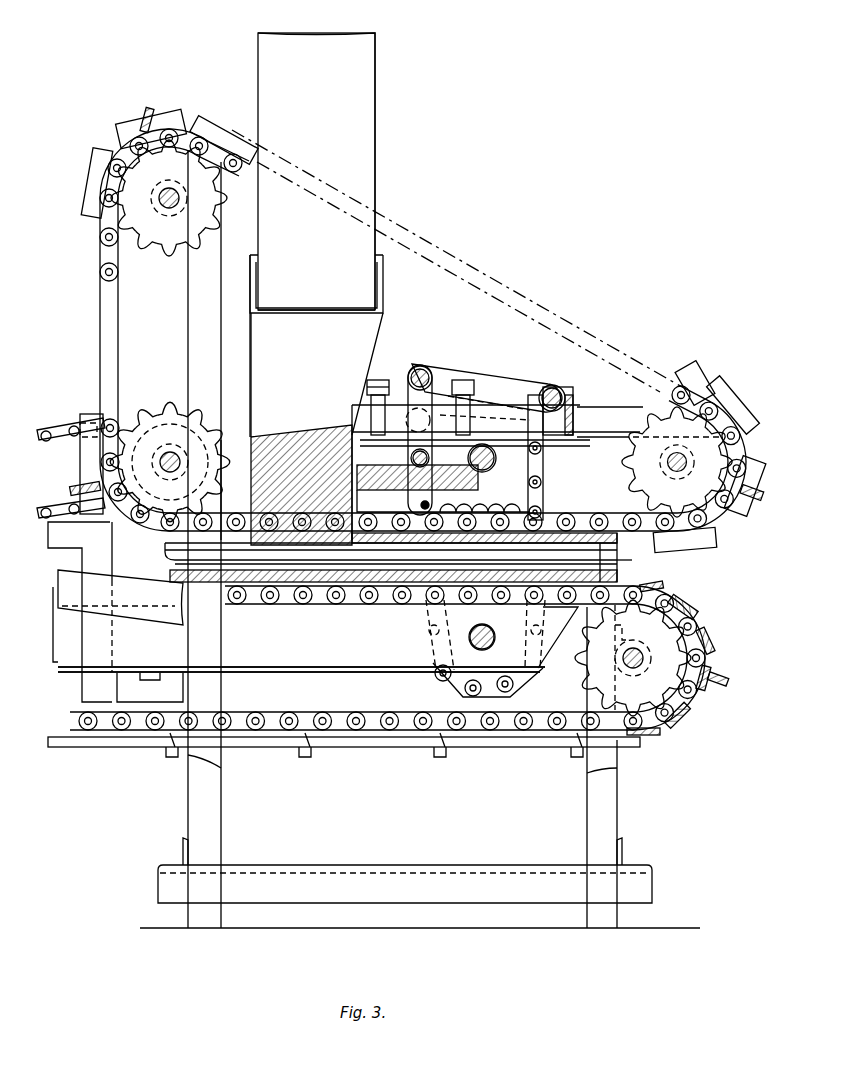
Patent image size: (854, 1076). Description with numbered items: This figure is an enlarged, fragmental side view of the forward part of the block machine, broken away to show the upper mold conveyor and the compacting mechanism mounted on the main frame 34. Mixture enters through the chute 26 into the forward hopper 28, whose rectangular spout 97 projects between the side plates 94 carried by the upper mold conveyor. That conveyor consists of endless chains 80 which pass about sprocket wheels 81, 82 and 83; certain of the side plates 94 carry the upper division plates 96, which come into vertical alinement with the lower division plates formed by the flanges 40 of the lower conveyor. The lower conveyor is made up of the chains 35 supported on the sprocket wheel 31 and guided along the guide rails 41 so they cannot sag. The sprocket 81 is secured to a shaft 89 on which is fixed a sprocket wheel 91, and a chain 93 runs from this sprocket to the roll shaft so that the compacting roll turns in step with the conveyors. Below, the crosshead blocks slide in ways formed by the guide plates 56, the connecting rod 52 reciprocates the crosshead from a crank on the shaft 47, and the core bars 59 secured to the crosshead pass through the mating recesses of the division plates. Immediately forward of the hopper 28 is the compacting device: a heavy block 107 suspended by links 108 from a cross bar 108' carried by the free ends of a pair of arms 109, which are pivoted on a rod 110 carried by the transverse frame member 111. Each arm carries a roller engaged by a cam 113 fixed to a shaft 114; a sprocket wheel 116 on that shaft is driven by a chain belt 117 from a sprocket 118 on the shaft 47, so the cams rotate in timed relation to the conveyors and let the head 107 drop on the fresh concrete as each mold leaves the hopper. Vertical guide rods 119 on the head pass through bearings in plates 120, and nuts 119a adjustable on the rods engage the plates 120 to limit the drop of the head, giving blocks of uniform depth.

The chute 26 is at (373, 153).
The forward hopper 28 is at (372, 338).
The side plates 94 is at (90, 205).
The endless chains 80 is at (102, 258).
The sprocket wheel 82 is at (162, 257).
The sprocket wheel 81 is at (197, 422).
The shaft 89 is at (180, 458).
The spout 97 is at (218, 495).
The chain 93 is at (68, 430).
The sprocket wheel 91 is at (80, 468).
The guide plates 56 is at (55, 528).
The core bars 59 is at (173, 553).
The connecting rod 52 is at (163, 613).
The endless chains 35 is at (348, 607).
The longitudinal flange 40 is at (620, 577).
The guide rails 41 is at (366, 670).
The sprocket 118 is at (426, 628).
The shaft 47 is at (480, 630).
The sprocket wheel 31 is at (578, 675).
The main frame 34 is at (605, 793).
The upper division plates 96 is at (640, 560).
The sprocket wheel 83 is at (622, 500).
The chain belt 117 is at (538, 467).
The sprocket wheel 116 is at (535, 487).
The plates 120 is at (575, 441).
The compacting head 107 is at (483, 485).
The cam 113 is at (494, 457).
The shaft 114 is at (496, 466).
The rod 110 is at (557, 375).
The transverse member 111 is at (580, 407).
The arms 109 is at (460, 365).
The links 108 is at (405, 433).
The cross bar 108' is at (430, 361).
The vertical guide rods 119 is at (380, 398).
The nuts 119a is at (383, 385).